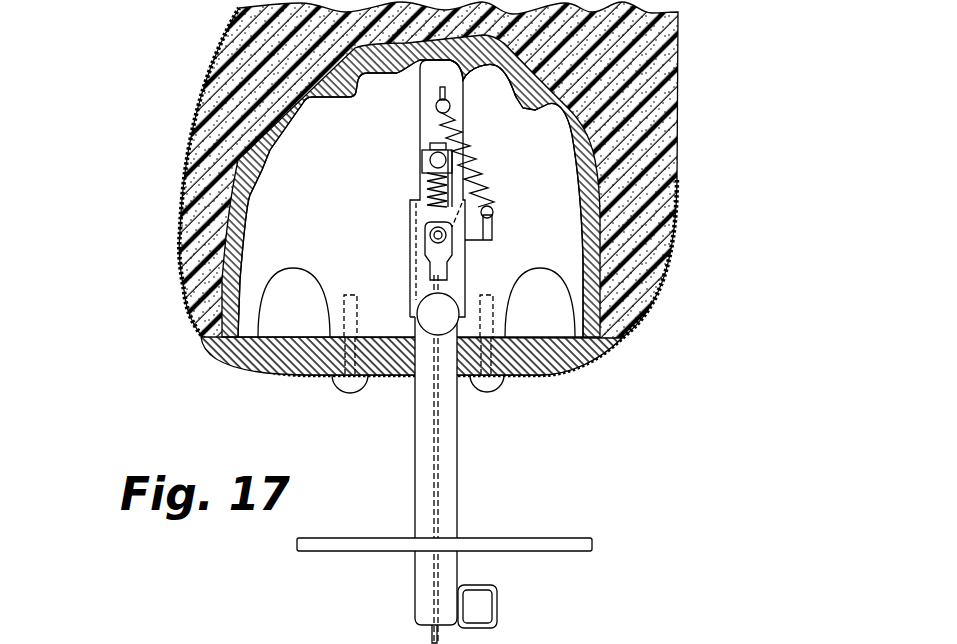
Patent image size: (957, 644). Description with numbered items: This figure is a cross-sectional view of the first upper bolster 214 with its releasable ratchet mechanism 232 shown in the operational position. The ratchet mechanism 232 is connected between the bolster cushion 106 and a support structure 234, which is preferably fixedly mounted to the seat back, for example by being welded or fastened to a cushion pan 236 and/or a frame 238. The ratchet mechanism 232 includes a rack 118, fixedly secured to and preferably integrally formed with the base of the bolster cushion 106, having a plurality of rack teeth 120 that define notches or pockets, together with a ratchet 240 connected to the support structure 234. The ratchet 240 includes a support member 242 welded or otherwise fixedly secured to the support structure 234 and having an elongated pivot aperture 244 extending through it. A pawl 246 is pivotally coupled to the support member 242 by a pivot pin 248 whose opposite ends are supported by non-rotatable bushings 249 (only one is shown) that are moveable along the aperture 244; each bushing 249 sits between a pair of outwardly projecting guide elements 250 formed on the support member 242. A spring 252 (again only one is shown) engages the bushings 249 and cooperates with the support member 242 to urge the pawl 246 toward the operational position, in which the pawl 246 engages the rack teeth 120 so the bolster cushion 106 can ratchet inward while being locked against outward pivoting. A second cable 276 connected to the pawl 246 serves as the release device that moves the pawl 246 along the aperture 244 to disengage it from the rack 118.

The first upper bolster 214 is at (186, 64).
The bolster cushion 106 is at (161, 131).
The rack 118 is at (512, 100).
The rack teeth 120 is at (262, 160).
The ratchet mechanism 232 is at (414, 194).
The support structure 234 is at (458, 440).
The cushion pan 236 is at (540, 553).
The frame 238 is at (498, 602).
The ratchet 240 is at (429, 236).
The support member 242 is at (429, 280).
The elongated pivot aperture 244 is at (429, 212).
The pawl 246 is at (483, 78).
The pivot pin 248 is at (424, 152).
The bushing 249 is at (421, 158).
The guide elements 250 is at (418, 177).
The spring 252 is at (468, 206).
The second cable 276 is at (505, 243).